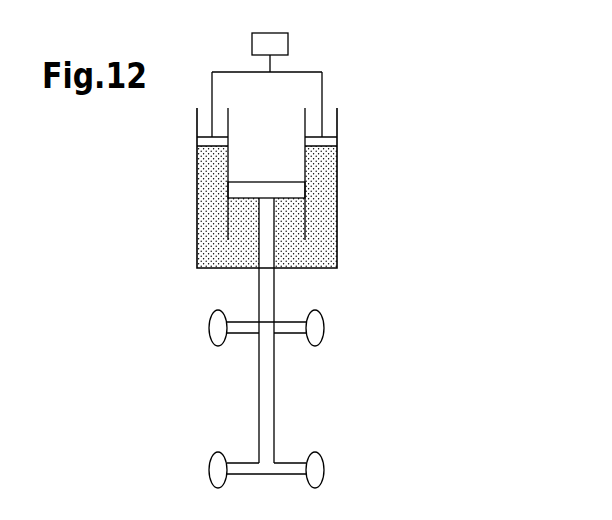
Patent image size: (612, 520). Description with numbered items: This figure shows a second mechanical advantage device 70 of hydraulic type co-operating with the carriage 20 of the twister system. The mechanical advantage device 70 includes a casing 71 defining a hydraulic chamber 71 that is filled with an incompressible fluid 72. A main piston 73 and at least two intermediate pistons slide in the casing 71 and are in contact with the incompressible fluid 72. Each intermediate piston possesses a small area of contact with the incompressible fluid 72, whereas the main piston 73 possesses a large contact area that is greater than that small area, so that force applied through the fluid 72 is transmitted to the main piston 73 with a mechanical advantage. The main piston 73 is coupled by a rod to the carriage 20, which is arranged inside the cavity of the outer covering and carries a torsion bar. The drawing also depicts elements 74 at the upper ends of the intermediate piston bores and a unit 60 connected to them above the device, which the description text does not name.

The carriage 20 is at (280, 385).
The control unit 60 is at (289, 47).
The mechanical advantage device 70 is at (412, 138).
The casing 71 is at (207, 225).
The incompressible fluid 72 is at (325, 227).
The main piston 73 is at (317, 190).
The valve 74 is at (197, 139).